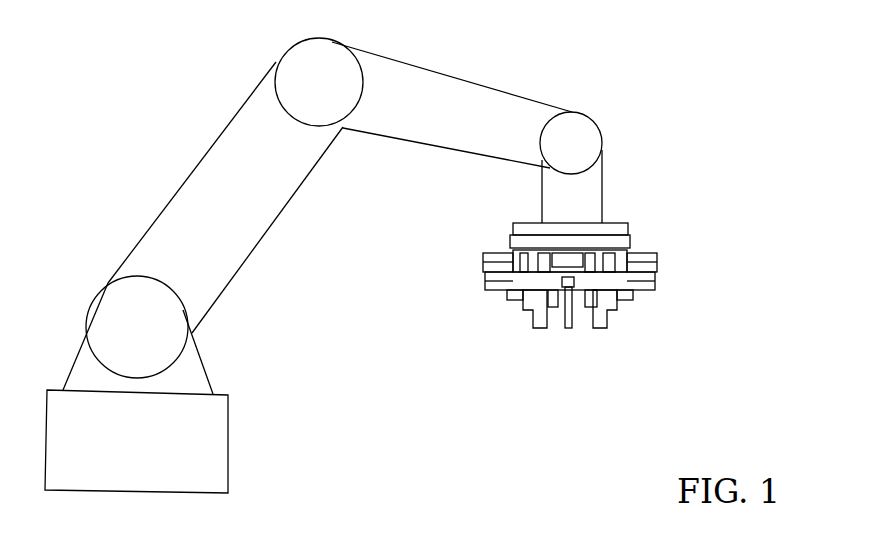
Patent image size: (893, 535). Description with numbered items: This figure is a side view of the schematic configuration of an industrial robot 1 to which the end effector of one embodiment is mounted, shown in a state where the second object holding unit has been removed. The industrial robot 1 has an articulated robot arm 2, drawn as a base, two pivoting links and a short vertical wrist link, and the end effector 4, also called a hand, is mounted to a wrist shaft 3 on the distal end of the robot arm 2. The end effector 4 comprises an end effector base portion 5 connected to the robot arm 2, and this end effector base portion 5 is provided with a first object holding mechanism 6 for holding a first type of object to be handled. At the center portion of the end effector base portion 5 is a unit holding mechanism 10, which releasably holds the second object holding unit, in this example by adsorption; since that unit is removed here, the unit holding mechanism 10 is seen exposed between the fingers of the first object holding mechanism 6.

The industrial robot 1 is at (85, 82).
The robot arm 2 is at (447, 80).
The wrist shaft 3 is at (590, 193).
The end effector 4 is at (585, 283).
The end effector base portion 5 is at (510, 230).
The first object holding mechanism 6 is at (524, 316).
The unit holding mechanism 10 is at (575, 303).